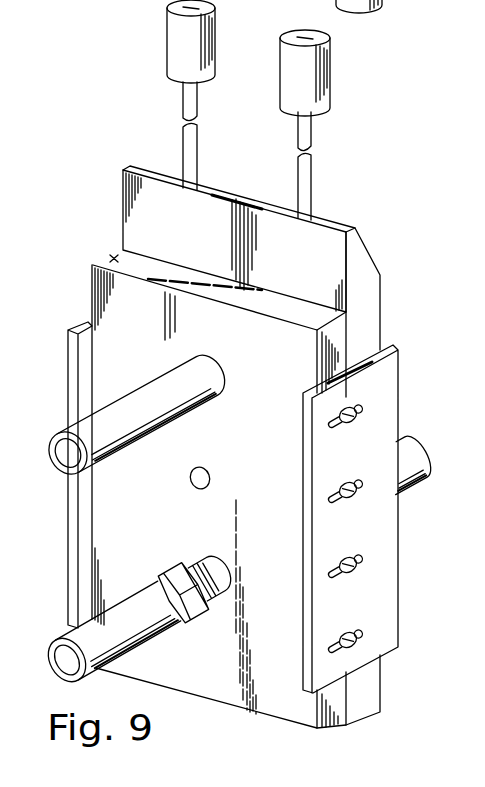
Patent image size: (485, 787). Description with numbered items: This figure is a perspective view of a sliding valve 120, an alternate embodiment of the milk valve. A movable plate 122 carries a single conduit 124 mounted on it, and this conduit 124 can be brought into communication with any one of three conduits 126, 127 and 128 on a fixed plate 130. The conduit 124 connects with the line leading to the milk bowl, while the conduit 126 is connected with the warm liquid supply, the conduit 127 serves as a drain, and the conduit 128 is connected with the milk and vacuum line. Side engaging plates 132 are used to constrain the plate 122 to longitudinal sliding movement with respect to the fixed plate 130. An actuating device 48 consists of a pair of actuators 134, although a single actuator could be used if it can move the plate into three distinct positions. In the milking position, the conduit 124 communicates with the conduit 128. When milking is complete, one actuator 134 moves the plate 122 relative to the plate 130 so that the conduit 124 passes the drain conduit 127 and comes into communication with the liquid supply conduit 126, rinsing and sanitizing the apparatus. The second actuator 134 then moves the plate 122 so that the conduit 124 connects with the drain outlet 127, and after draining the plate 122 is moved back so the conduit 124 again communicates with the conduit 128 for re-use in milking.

The actuating device 48 is at (281, 58).
The sliding valve 120 is at (348, 232).
The plate 122 is at (140, 218).
The conduit 124 is at (415, 483).
The conduit 126 is at (90, 428).
The drain conduit 127 is at (192, 484).
The conduit 128 is at (148, 634).
The fixed plate 130 is at (114, 258).
The side engaging plates 132 is at (78, 325).
The actuator 134 is at (175, 40).